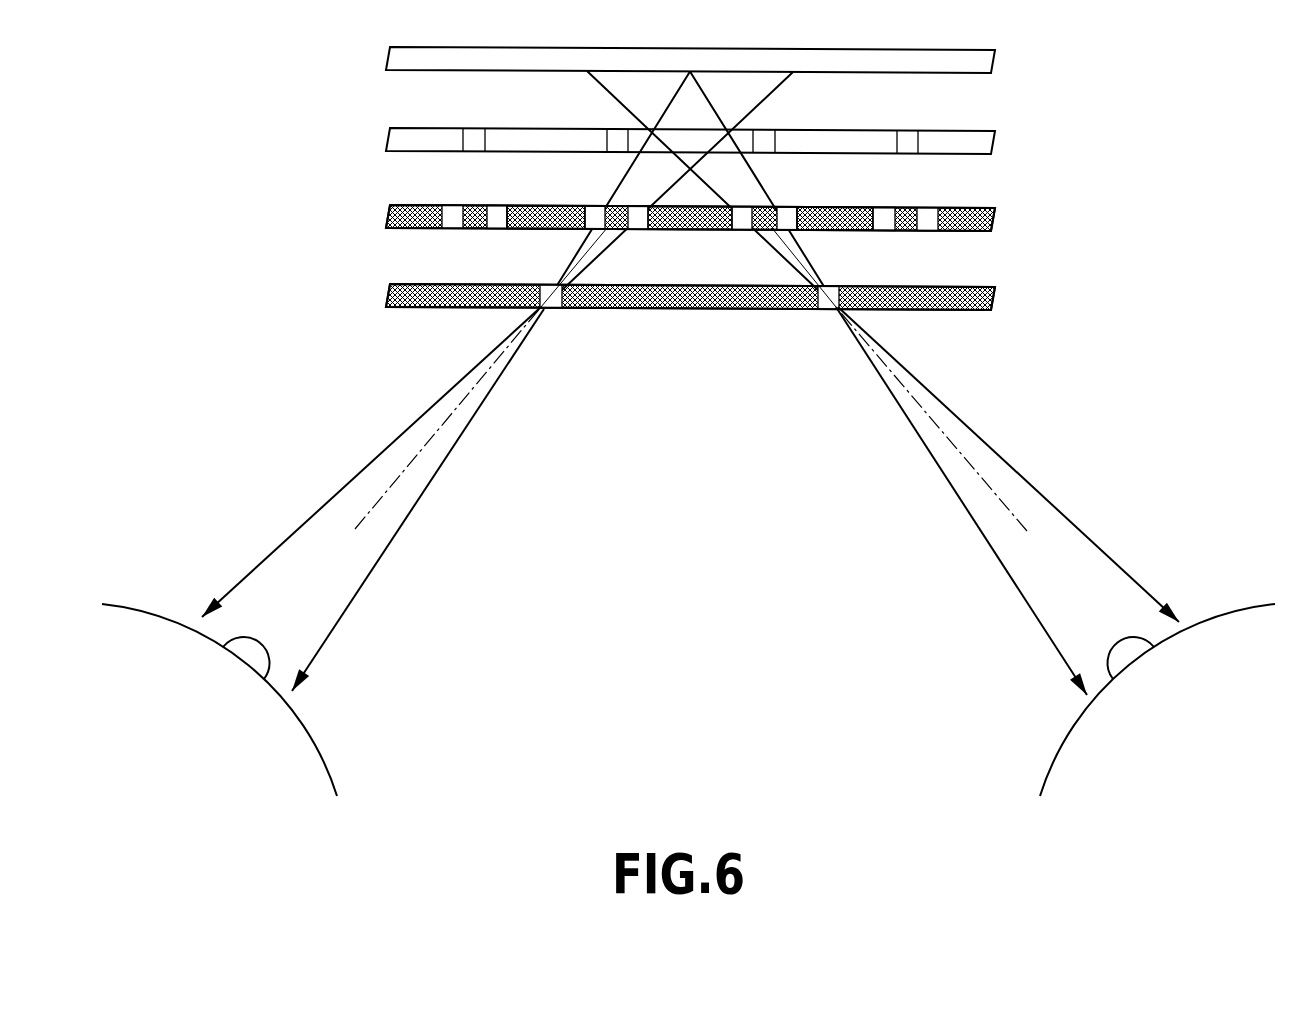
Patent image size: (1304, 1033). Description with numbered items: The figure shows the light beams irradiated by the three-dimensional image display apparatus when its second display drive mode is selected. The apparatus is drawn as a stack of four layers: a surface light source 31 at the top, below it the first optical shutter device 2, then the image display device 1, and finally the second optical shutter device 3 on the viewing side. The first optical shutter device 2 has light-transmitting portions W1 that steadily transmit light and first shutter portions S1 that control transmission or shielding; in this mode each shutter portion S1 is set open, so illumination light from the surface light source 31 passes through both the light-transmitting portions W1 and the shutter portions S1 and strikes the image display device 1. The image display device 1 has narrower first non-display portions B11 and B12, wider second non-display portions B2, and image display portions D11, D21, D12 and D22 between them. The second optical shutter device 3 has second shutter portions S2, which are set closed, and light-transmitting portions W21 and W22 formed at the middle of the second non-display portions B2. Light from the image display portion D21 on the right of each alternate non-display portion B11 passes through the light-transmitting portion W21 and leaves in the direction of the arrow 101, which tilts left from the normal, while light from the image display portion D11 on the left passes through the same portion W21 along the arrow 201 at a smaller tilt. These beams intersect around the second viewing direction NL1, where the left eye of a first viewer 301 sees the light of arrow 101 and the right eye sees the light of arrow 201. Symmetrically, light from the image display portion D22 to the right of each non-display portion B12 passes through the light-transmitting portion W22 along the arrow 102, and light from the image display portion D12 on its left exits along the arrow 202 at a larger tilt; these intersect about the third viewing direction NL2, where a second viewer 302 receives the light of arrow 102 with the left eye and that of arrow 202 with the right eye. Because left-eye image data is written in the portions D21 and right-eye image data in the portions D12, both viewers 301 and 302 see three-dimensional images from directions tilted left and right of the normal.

The surface light source 31 is at (963, 68).
The first optical shutter device 2 is at (708, 110).
The image display device 1 is at (708, 215).
The second optical shutter device 3 is at (708, 293).
The first shutter portion S1 is at (528, 133).
The light-transmitting portion W1 is at (615, 138).
The image display portion D11 is at (588, 205).
The first non-display portion B11 is at (590, 208).
The first non-display portion B12 is at (787, 208).
The image display portion D22 is at (791, 205).
The image display portion D21 is at (640, 229).
The image display portion D12 is at (741, 229).
The second non-display portion B2 is at (543, 229).
The second shutter portion S2 is at (681, 309).
The light-transmitting portion W21 is at (553, 309).
The light-transmitting portion W22 is at (822, 309).
The second viewing direction NL1 is at (424, 443).
The third viewing direction NL2 is at (958, 446).
The arrow 101 is at (343, 486).
The arrow 201 is at (394, 535).
The arrow 102 is at (988, 545).
The arrow 202 is at (1036, 488).
The first viewer 301 is at (143, 610).
The second viewer 302 is at (1237, 613).